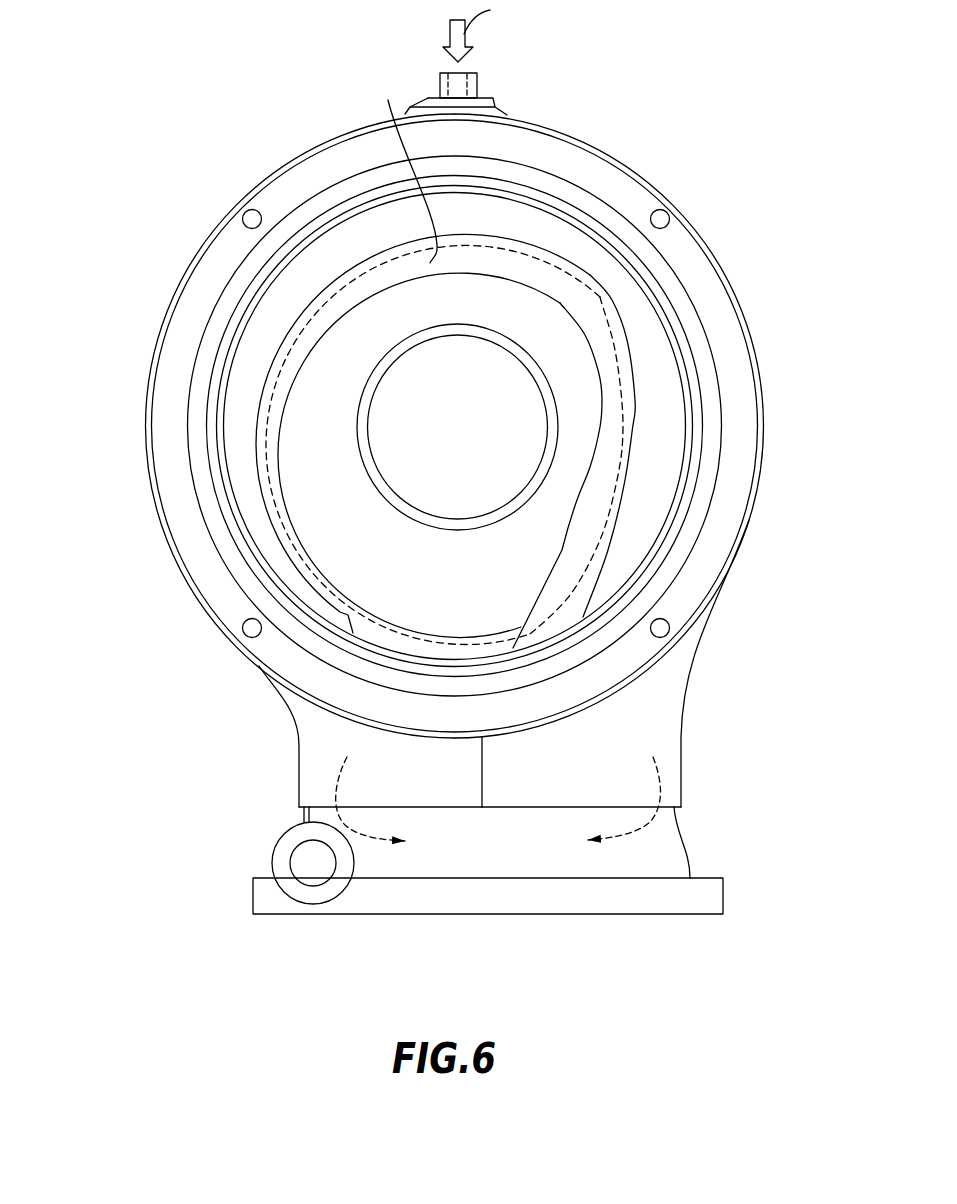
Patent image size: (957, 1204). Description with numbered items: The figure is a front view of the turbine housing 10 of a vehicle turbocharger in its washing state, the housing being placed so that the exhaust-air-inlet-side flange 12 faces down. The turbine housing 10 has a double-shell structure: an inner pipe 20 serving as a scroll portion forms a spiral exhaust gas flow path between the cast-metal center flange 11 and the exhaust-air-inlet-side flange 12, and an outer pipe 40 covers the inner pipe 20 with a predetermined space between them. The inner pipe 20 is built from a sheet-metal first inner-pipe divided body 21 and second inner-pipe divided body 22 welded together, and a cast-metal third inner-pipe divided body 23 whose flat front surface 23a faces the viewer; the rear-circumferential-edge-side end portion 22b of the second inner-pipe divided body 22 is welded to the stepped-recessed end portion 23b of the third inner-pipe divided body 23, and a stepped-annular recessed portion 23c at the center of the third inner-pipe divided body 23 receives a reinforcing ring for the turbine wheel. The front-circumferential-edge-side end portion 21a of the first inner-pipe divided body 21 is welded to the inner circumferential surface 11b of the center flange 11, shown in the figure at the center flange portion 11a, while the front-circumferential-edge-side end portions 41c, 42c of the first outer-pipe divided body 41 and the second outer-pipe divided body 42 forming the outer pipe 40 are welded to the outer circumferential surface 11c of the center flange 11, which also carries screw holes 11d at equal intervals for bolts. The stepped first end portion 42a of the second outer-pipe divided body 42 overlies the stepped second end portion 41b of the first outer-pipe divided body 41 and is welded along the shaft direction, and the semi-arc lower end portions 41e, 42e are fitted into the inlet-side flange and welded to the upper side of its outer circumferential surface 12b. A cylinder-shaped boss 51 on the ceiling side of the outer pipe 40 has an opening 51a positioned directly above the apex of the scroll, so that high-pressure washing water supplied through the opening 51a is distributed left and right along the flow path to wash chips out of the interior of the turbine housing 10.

The turbine housing 10 is at (714, 728).
The center flange 11 is at (723, 262).
The inner peripheral surface 11a is at (537, 426).
The inner circumferential surface 11b is at (668, 518).
The outer circumferential surface 11c is at (192, 256).
The screw holes 11d is at (248, 214).
The exhaust-air-inlet-side flange 12 is at (517, 916).
The outer circumferential surface 12b is at (565, 820).
The inner pipe 20 is at (480, 386).
The first inner-pipe divided body 21 is at (690, 462).
The front-circumferential-edge-side end portion 21a is at (680, 343).
The second inner-pipe divided body 22 is at (640, 567).
The rear-circumferential-edge-side end portion 22b is at (380, 263).
The third inner-pipe divided body 23 is at (580, 277).
The front surface 23a is at (323, 505).
The end portion 23b is at (543, 270).
The recessed portion 23c is at (363, 387).
The outer pipe 40 is at (451, 491).
The first outer-pipe divided body 41 is at (686, 768).
The second end portion 41b is at (501, 100).
The front-circumferential-edge-side end portion 41c is at (765, 415).
The lower end portion 41e is at (627, 787).
The second outer-pipe divided body 42 is at (292, 773).
The first end portion 42a is at (428, 98).
The front-circumferential-edge-side end portion 42c is at (143, 432).
The lower end portion 42e is at (422, 797).
The cylinder-shaped boss 51 is at (481, 76).
The opening 51a is at (452, 70).